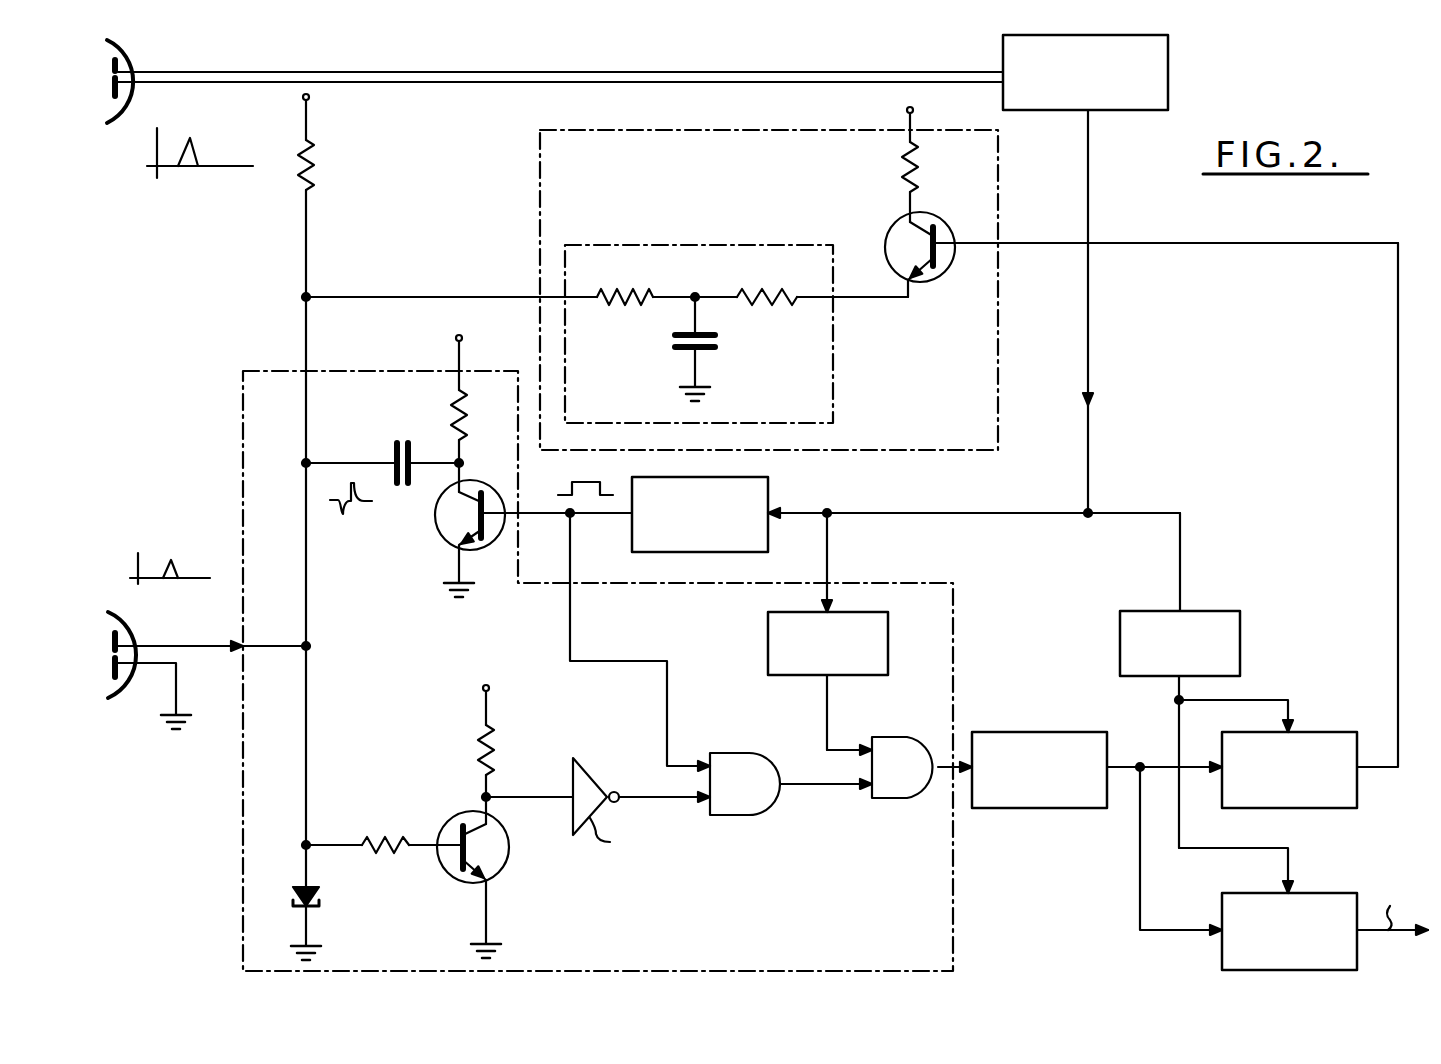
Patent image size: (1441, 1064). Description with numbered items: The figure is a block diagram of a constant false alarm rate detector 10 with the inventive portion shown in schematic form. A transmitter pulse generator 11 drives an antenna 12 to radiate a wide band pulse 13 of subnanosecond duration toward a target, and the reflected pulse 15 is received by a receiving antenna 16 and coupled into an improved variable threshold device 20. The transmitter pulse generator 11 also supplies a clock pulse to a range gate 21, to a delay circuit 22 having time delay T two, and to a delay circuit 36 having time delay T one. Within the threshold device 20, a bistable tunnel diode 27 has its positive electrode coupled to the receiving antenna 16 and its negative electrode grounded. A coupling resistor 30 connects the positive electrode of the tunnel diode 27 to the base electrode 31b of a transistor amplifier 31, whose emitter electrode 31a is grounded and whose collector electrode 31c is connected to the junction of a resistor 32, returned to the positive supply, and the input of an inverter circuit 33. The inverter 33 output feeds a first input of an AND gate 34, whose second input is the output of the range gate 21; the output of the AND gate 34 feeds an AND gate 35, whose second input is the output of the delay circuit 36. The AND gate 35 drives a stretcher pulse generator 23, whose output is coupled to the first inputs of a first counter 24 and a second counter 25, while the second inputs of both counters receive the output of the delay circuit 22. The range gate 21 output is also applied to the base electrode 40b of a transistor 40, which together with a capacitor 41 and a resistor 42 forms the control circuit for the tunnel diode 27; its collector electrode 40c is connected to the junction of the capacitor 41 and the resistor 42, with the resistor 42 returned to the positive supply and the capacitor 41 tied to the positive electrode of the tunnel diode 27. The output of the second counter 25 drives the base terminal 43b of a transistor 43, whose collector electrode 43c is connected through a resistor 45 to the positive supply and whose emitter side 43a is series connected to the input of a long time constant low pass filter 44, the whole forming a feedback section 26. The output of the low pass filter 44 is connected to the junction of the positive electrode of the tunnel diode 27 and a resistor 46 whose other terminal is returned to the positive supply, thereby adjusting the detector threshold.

The constant false alarm rate detector 10 is at (466, 128).
The transmitter pulse generator 11 is at (1168, 72).
The antenna 12 is at (133, 70).
The pulse 13 is at (190, 140).
The reflected pulse 15 is at (172, 560).
The receiving antenna 16 is at (133, 632).
The variable threshold device 20 is at (406, 664).
The range gate 21 is at (768, 482).
The delay circuit 22 is at (1240, 643).
The stretcher pulse generator 23 is at (1038, 732).
The first counter 24 is at (1330, 893).
The second counter 25 is at (1325, 732).
The automatic gain control circuit 26 is at (667, 130).
The tunnel diode 27 is at (322, 903).
The coupling resistor 30 is at (380, 836).
The transistor amplifier 31 is at (494, 881).
The emitter electrode 31a is at (477, 879).
The base electrode 31b is at (458, 826).
The collector electrode 31c is at (492, 828).
The resistor 32 is at (478, 745).
The inverter circuit 33 is at (590, 768).
The AND gate 34 is at (741, 753).
The AND gate 35 is at (903, 737).
The delay circuit 36 is at (768, 643).
The transistor 40 is at (510, 525).
The base electrode 40b is at (490, 540).
The collector electrode 40c is at (470, 488).
The capacitor 41 is at (392, 455).
The resistor 42 is at (452, 410).
The transistor 43 is at (1118, 246).
The emitter of transistor 43 43a is at (904, 286).
The base terminal 43b is at (945, 268).
The collector electrode 43c is at (918, 228).
The long time constant low pass filter 44 is at (693, 245).
The resistor 45 is at (916, 168).
The resistor 46 is at (314, 180).